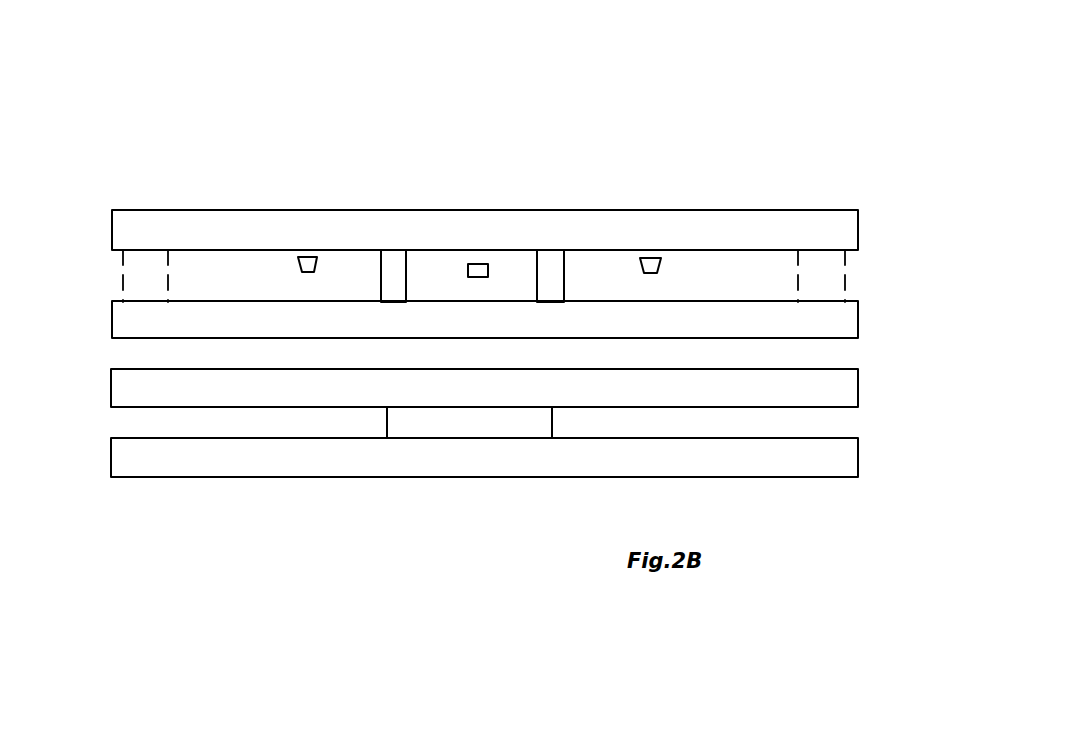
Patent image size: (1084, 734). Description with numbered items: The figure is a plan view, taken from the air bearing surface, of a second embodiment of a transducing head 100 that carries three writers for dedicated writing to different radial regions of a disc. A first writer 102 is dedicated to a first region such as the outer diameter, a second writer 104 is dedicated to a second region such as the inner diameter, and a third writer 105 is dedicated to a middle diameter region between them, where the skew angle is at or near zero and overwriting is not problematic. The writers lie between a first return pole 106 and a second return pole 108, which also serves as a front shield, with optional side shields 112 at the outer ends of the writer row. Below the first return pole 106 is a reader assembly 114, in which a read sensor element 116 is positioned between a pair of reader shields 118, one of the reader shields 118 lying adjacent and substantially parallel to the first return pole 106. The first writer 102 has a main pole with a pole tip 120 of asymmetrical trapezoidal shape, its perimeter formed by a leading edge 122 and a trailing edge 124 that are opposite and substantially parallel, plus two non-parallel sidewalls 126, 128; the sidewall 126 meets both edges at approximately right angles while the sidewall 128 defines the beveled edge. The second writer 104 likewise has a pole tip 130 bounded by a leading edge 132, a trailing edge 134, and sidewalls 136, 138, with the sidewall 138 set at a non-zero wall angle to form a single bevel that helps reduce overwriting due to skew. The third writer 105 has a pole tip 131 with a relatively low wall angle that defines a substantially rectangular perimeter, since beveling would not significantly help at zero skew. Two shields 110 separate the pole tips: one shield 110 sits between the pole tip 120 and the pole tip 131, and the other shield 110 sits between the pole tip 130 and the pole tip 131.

The transducing head 100 is at (616, 88).
The first writer 102 is at (303, 200).
The second writer 104 is at (632, 208).
The third writer 105 is at (474, 192).
The first return pole 106 is at (838, 326).
The second return pole 108 is at (838, 234).
The shield 110 is at (397, 255).
The side shield 112 is at (141, 276).
The reader assembly 114 is at (110, 369).
The read sensor element 116 is at (446, 430).
The reader shield 118 is at (830, 458).
The pole tip 120 is at (308, 254).
The leading edge 122 is at (311, 272).
The trailing edge 124 is at (298, 258).
The sidewall 126 is at (317, 262).
The sidewall 128 is at (302, 270).
The pole tip 130 is at (638, 261).
The pole tip 131 is at (482, 264).
The leading edge 132 is at (652, 273).
The trailing edge 134 is at (652, 256).
The sidewall 136 is at (640, 270).
The sidewall 138 is at (661, 265).